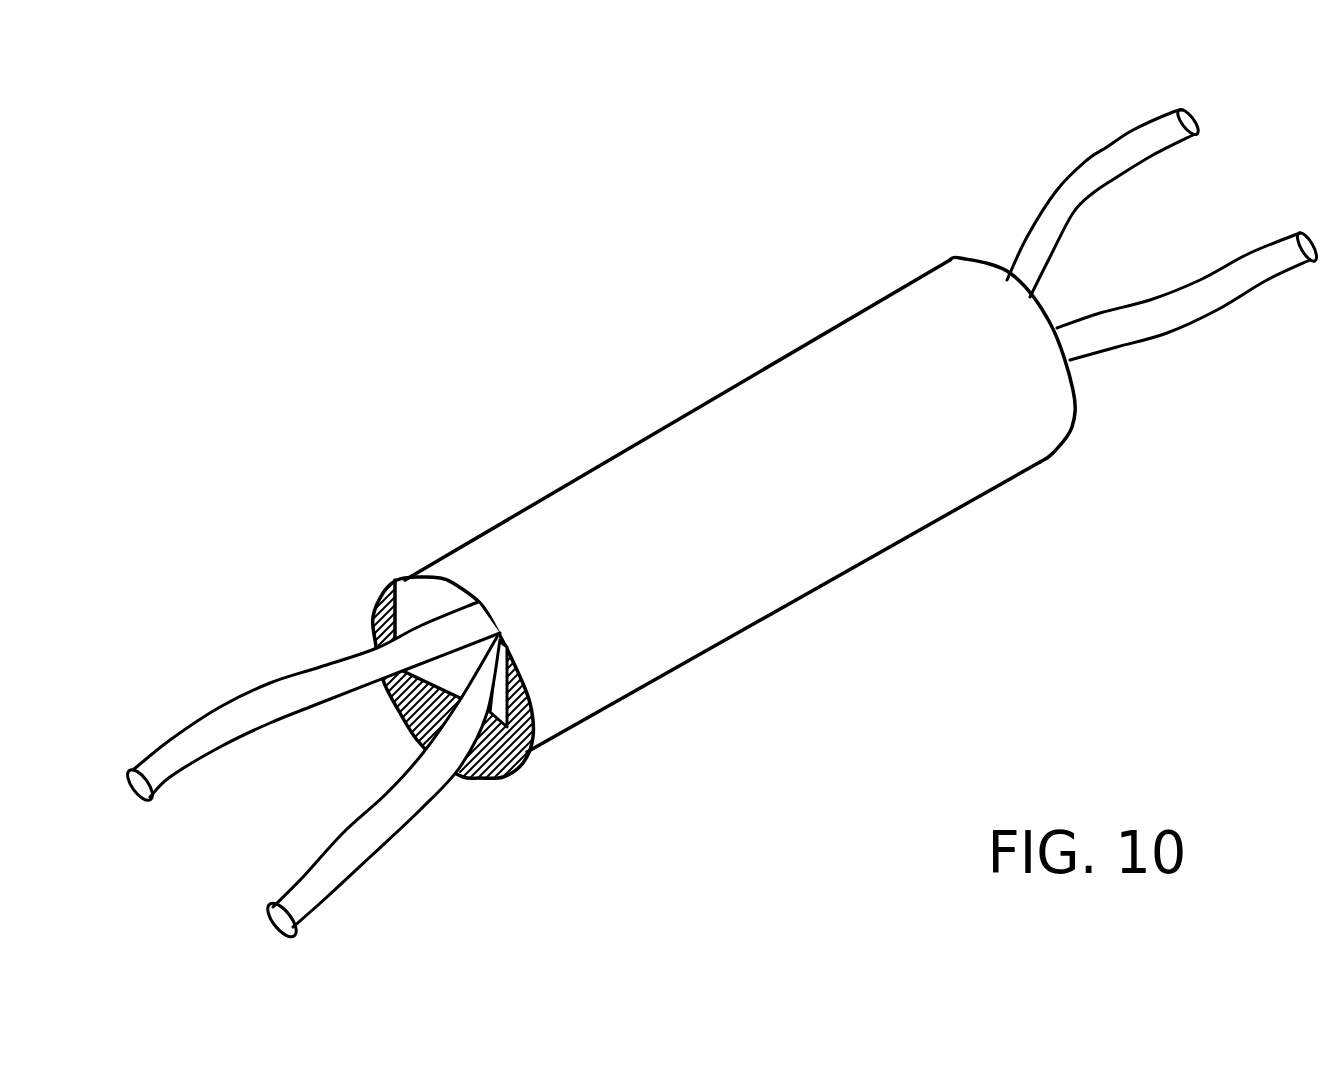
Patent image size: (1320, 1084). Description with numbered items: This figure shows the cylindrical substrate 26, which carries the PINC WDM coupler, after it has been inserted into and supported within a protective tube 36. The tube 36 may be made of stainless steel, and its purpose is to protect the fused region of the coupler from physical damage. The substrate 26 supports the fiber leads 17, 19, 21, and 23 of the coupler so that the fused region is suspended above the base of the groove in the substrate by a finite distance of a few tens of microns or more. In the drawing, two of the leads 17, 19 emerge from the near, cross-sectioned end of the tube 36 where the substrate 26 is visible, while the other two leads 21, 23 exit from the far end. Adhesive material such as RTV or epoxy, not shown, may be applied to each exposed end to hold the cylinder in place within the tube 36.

The lead 17 is at (200, 730).
The lead 19 is at (350, 855).
The lead 21 is at (1105, 151).
The lead 23 is at (1237, 287).
The substrate 26 is at (380, 603).
The tube 36 is at (747, 590).